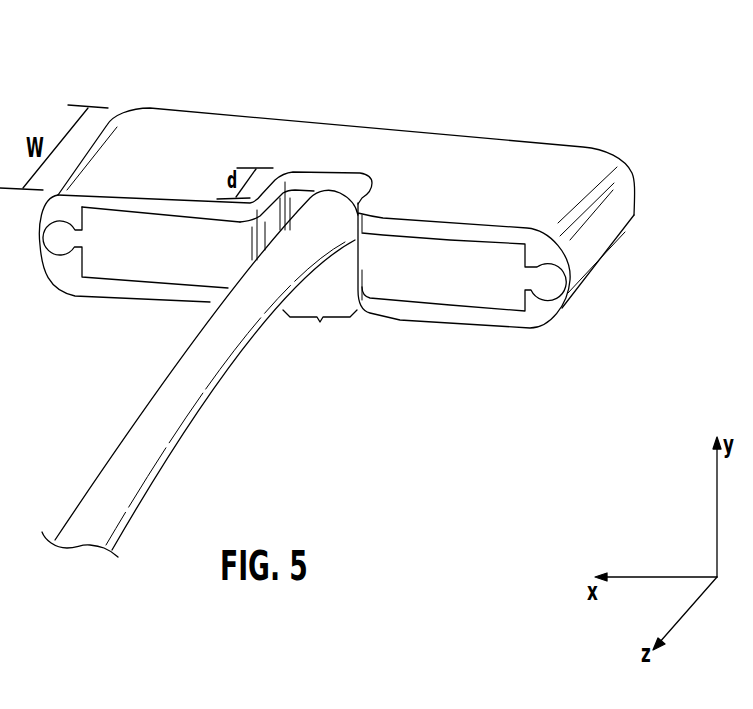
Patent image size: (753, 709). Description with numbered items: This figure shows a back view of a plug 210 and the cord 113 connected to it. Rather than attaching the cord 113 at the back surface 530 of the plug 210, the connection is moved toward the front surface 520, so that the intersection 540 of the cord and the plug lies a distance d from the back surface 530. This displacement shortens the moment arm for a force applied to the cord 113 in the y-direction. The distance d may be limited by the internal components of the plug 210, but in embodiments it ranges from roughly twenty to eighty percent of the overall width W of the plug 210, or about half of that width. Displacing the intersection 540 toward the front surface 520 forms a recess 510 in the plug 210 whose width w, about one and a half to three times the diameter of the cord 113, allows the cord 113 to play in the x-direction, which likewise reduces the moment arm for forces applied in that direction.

The plug 210 is at (368, 234).
The front surface 520 is at (346, 132).
The intersection 540 is at (343, 202).
The back surface 530 is at (483, 313).
The recess 510 is at (319, 321).
The cord 113 is at (225, 370).